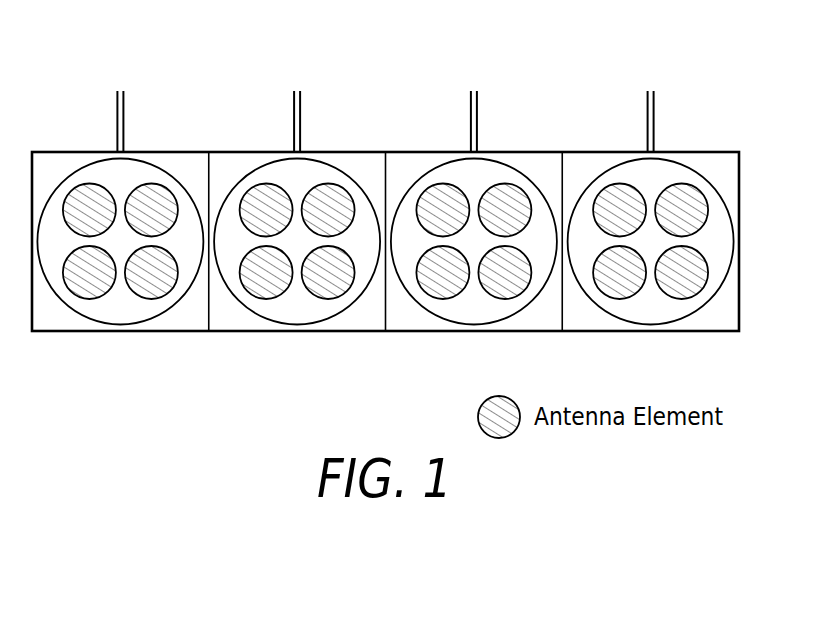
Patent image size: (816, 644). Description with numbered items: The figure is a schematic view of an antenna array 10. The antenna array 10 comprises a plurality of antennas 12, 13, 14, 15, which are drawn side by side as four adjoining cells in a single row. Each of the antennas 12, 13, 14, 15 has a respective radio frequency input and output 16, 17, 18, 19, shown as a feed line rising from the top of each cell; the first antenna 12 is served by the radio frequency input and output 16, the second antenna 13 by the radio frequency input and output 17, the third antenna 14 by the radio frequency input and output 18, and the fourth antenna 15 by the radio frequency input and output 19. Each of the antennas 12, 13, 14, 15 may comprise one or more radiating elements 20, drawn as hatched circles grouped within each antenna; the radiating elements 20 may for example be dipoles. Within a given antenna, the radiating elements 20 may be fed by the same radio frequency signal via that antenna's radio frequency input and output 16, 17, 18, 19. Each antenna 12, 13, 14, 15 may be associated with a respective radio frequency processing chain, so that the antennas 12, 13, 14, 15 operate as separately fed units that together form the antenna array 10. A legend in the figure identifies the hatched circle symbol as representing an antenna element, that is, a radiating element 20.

The antenna array 10 is at (73, 59).
The antenna 12 is at (183, 322).
The antenna 13 is at (362, 322).
The antenna 14 is at (538, 322).
The antenna 15 is at (713, 322).
The radio frequency input and output 16 is at (124, 104).
The radio frequency input and output 17 is at (301, 104).
The radio frequency input and output 18 is at (478, 104).
The radio frequency input and output 19 is at (655, 104).
The radiating element 20 is at (89, 292).